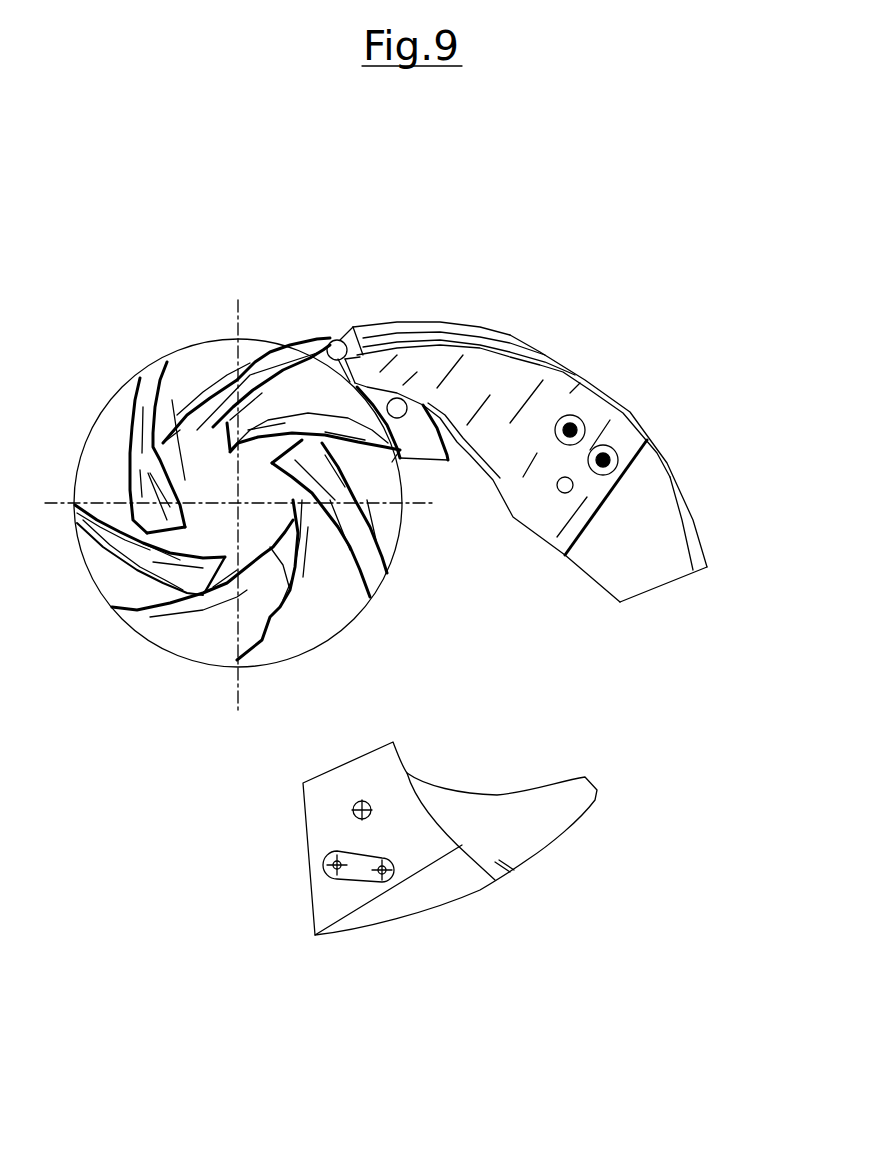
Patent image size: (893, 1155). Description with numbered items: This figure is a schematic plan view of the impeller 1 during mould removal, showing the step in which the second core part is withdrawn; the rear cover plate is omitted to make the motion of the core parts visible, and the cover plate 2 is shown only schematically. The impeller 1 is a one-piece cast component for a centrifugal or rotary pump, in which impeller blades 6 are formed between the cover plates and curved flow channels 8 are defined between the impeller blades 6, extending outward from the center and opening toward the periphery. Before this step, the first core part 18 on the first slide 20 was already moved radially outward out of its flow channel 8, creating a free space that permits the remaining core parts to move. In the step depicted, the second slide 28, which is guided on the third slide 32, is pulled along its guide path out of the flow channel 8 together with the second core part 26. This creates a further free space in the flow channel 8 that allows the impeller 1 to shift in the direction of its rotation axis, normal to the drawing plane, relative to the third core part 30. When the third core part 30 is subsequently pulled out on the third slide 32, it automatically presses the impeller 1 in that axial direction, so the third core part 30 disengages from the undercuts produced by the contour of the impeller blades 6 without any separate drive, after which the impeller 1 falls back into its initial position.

The impeller 1 is at (188, 348).
The cover plate 2 is at (107, 427).
The impeller blades 6 is at (405, 483).
The flow channels 8 is at (276, 390).
The first core part 18 is at (570, 788).
The first slide 20 is at (480, 877).
The second core part 26 is at (477, 372).
The second slide 28 is at (590, 372).
The third core part 30 is at (312, 390).
The third slide 32 is at (660, 497).